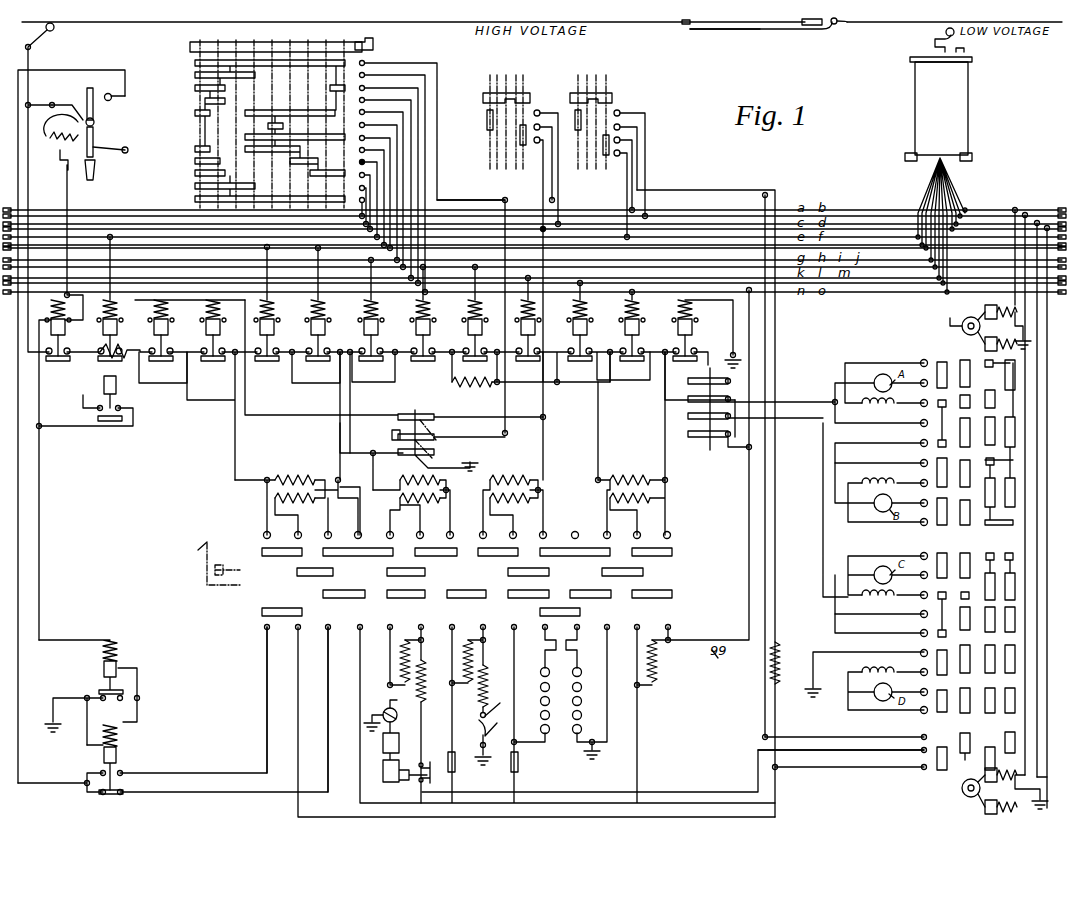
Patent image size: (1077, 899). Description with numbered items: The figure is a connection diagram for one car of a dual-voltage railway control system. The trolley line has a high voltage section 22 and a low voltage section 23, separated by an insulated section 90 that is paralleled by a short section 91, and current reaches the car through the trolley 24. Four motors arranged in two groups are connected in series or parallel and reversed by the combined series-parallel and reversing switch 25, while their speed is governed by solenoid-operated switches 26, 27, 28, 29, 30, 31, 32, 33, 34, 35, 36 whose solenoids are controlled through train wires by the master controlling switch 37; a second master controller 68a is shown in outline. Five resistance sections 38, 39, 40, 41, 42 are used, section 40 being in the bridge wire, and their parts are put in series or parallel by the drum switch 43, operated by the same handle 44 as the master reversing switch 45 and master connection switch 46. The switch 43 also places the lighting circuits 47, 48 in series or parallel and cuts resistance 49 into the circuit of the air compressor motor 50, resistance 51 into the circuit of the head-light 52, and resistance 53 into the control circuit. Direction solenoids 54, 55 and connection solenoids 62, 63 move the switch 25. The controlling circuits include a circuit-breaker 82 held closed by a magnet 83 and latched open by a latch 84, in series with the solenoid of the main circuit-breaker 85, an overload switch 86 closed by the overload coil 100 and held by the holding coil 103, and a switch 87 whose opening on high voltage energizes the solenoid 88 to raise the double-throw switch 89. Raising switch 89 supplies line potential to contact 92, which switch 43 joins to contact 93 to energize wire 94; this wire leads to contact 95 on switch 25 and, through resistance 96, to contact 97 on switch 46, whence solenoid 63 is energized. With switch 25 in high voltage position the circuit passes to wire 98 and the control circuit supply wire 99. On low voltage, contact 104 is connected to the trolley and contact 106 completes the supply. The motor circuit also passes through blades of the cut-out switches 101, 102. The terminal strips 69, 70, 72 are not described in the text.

The high voltage section 22 is at (122, 18).
The low voltage section 23 is at (842, 23).
The trolley 24 is at (50, 38).
The combined series-parallel and reversing switch 25 is at (930, 523).
The solenoid-operated switch 26 is at (166, 350).
The solenoid-operated switch 27 is at (218, 350).
The solenoid-operated switch 28 is at (271, 350).
The solenoid-operated switch 29 is at (323, 350).
The solenoid-operated switch 30 is at (376, 350).
The solenoid-operated switch 31 is at (426, 350).
The solenoid-operated switch 32 is at (480, 350).
The solenoid-operated switch 33 is at (533, 350).
The solenoid-operated switch 34 is at (585, 350).
The solenoid-operated switch 35 is at (637, 350).
The solenoid-operated switch 36 is at (703, 350).
The master controlling switch 37 is at (278, 116).
The resistance section 38 is at (296, 505).
The resistance section 39 is at (411, 505).
The resistance section 40 is at (488, 386).
The resistance section 41 is at (513, 476).
The resistance section 42 is at (632, 505).
The drum switch 43 is at (479, 581).
The handle 44 is at (209, 563).
The master reversing switch 45 is at (505, 114).
The master connection switch 46 is at (590, 114).
The lighting circuit 47 is at (545, 736).
The lighting circuit 48 is at (577, 736).
The resistance 49 is at (398, 658).
The air compressor motor 50 is at (386, 710).
The resistance 51 is at (480, 657).
The head-light 52 is at (474, 731).
The resistance 53 is at (654, 661).
The direction solenoid 54 is at (1010, 782).
The direction solenoid 55 is at (982, 812).
The connection solenoid 62 is at (980, 308).
The connection solenoid 63 is at (985, 347).
The second master controller 68a is at (938, 161).
The switch bar 69 is at (527, 95).
The switch bar 70 is at (610, 95).
The terminal strip 72 is at (373, 48).
The circuit-breaker 82 is at (115, 105).
The magnet 83 is at (52, 136).
The latch 84 is at (122, 150).
The main circuit-breaker 85 is at (55, 470).
The overload switch 86 is at (119, 417).
The switch 87 is at (98, 693).
The solenoid 88 is at (120, 735).
The double-throw switch 89 is at (122, 770).
The insulated section 90 is at (802, 25).
The short section 91 is at (720, 29).
The contact 92 is at (264, 630).
The contact 93 is at (525, 722).
The wire 94 is at (687, 192).
The contact 95 is at (920, 768).
The resistance 96 is at (780, 656).
The contact 97 is at (620, 113).
The wire 98 is at (680, 785).
The control circuit supply wire 99 is at (484, 200).
The overload coil 100 is at (110, 359).
The cut-out switch 101 is at (761, 409).
The cut-out switch 102 is at (395, 395).
The holding coil 103 is at (113, 322).
The contact 104 is at (328, 628).
The contact 106 is at (916, 737).